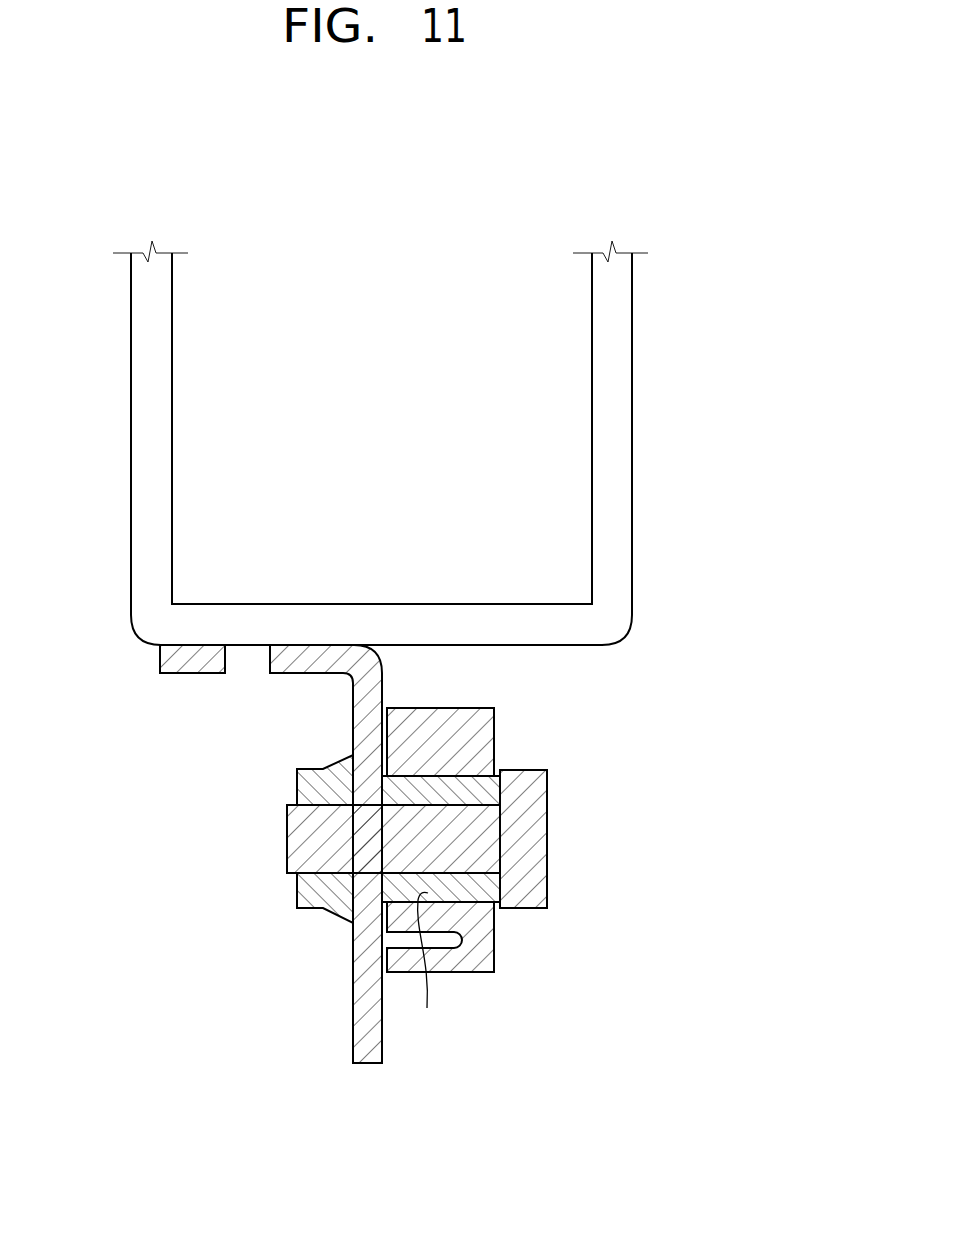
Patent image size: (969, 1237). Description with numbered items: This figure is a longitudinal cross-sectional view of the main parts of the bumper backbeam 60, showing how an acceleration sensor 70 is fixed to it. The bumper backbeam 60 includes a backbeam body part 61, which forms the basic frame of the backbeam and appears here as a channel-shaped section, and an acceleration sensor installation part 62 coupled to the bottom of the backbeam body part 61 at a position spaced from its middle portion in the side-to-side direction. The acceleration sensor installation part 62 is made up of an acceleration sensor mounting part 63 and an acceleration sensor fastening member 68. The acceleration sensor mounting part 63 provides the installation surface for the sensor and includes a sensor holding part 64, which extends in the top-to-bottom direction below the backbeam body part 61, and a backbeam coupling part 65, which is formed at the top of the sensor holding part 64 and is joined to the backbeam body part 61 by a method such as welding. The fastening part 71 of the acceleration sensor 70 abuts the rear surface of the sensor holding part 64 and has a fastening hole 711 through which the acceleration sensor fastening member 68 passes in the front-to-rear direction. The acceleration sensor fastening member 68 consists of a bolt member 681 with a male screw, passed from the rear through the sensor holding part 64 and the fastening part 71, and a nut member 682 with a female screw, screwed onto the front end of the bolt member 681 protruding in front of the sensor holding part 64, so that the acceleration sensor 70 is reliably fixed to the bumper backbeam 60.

The bumper backbeam 60 is at (437, 443).
The backbeam body part 61 is at (608, 482).
The acceleration sensor installation part 62 is at (439, 854).
The acceleration sensor mounting part 63 is at (400, 672).
The sensor holding part 64 is at (365, 990).
The backbeam coupling part 65 is at (163, 663).
The acceleration sensor fastening member 68 is at (413, 815).
The bolt member 681 is at (303, 836).
The nut member 682 is at (298, 786).
The acceleration sensor 70 is at (511, 968).
The fastening part 71 is at (457, 957).
The fastening hole 711 is at (433, 968).